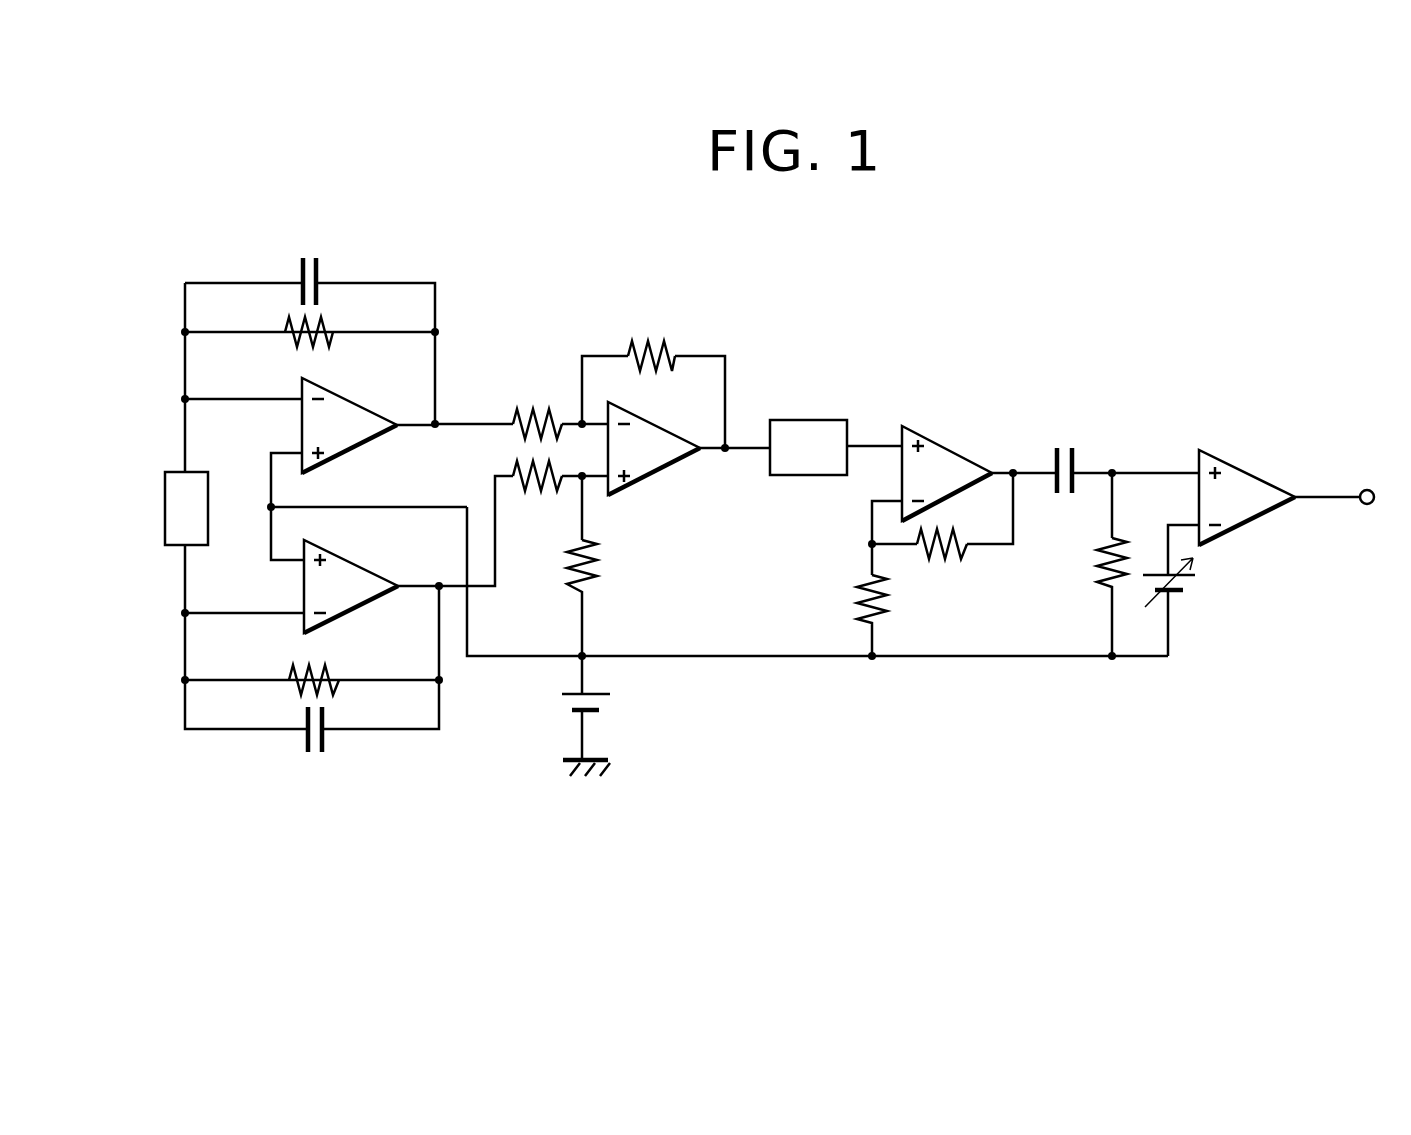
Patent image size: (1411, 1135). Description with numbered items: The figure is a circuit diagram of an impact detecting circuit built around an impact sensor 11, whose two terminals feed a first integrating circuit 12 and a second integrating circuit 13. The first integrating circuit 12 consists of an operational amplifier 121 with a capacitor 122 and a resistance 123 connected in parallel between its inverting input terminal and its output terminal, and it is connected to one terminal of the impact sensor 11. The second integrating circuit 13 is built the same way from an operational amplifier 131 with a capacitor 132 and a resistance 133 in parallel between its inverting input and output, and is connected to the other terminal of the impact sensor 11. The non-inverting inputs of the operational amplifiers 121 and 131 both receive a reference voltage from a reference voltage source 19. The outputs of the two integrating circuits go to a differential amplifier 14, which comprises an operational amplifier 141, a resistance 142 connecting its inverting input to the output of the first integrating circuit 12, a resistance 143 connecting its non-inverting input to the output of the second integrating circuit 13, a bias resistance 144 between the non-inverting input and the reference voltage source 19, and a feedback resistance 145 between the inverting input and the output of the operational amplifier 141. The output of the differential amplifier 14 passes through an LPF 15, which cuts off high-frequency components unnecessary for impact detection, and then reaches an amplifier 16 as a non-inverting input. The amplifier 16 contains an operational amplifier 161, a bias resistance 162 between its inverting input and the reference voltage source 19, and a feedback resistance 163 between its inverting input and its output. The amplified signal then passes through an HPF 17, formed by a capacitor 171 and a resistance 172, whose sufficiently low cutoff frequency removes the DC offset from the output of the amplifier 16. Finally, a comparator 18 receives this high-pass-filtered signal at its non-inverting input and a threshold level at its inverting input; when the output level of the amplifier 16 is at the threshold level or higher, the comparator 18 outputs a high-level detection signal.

The impact sensor 11 is at (165, 517).
The first integrating circuit 12 is at (325, 367).
The second integrating circuit 13 is at (310, 697).
The differential amplifier 14 is at (641, 467).
The LPF 15 is at (808, 418).
The amplifier 16 is at (912, 492).
The HPF 17 is at (1139, 511).
The comparator 18 is at (1255, 521).
The reference voltage source 19 is at (562, 703).
The operational amplifier 121 is at (350, 404).
The capacitor 122 is at (311, 256).
The resistance 123 is at (285, 343).
The operational amplifier 131 is at (350, 566).
The capacitor 132 is at (313, 754).
The resistance 133 is at (340, 669).
The operational amplifier 141 is at (645, 428).
The resistance 142 is at (535, 405).
The resistance 143 is at (538, 495).
The bias resistance 144 is at (605, 567).
The feedback resistance 145 is at (650, 335).
The operational amplifier 161 is at (953, 458).
The bias resistance 162 is at (855, 592).
The feedback resistance 163 is at (940, 560).
The capacitor 171 is at (1065, 445).
The resistance 172 is at (1098, 576).